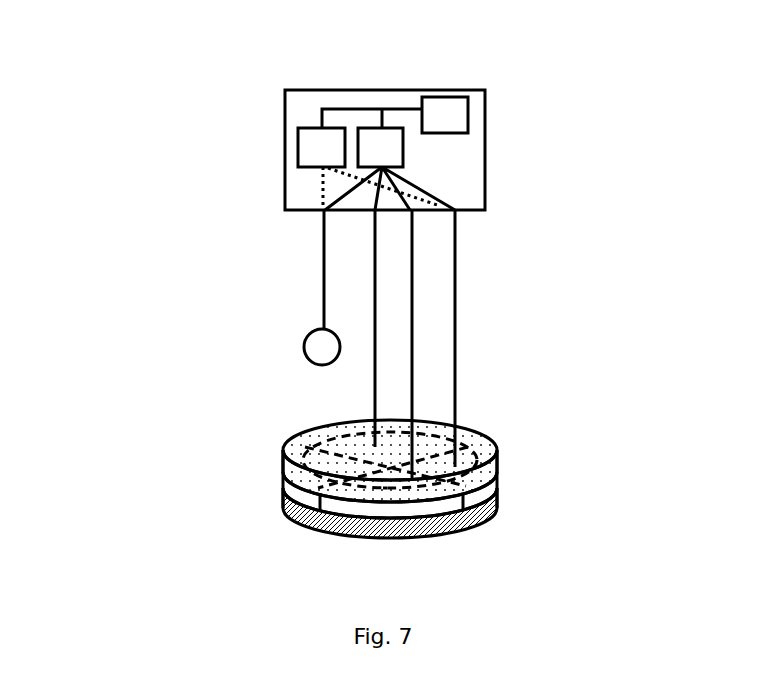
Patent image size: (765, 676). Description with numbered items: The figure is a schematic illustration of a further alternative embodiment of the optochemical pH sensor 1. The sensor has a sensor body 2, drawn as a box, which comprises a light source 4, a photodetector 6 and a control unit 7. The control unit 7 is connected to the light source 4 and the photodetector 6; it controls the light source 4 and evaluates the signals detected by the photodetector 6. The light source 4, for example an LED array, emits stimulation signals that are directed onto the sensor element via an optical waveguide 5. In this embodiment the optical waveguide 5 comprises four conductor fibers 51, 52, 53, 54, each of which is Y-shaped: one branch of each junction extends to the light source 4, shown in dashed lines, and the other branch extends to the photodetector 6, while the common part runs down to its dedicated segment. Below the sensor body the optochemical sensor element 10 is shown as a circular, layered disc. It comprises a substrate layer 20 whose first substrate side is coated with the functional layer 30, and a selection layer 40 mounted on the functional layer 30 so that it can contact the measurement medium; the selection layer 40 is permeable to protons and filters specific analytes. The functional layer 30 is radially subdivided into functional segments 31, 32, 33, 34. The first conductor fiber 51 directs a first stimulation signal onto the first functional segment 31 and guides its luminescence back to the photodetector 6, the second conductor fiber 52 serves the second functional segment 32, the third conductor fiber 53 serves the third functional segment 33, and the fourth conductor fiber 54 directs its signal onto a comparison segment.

The optochemical pH sensor 1 is at (105, 135).
The sensor body 2 is at (282, 90).
The light source 4 is at (317, 147).
The photodetector 6 is at (372, 147).
The control unit 7 is at (456, 115).
The optical waveguide 5 is at (163, 303).
The optochemical sensor element 10 is at (185, 482).
The substrate layer 20 is at (510, 465).
The functional layer 30 is at (512, 488).
The selection layer 40 is at (514, 515).
The first functional segment 31 is at (428, 440).
The second functional segment 32 is at (476, 466).
The third functional segment 33 is at (385, 485).
The fourth functional segment 34 is at (310, 466).
The first conductor fiber 51 is at (375, 400).
The second conductor fiber 52 is at (455, 267).
The third conductor fiber 53 is at (412, 368).
The fourth conductor fiber 54 is at (324, 256).